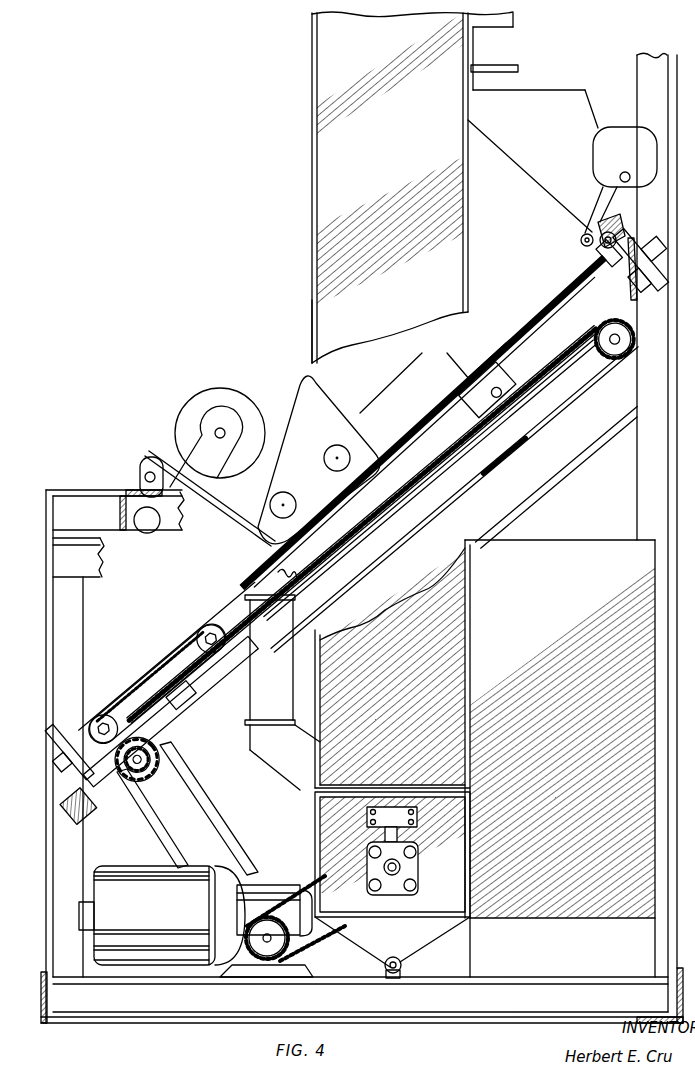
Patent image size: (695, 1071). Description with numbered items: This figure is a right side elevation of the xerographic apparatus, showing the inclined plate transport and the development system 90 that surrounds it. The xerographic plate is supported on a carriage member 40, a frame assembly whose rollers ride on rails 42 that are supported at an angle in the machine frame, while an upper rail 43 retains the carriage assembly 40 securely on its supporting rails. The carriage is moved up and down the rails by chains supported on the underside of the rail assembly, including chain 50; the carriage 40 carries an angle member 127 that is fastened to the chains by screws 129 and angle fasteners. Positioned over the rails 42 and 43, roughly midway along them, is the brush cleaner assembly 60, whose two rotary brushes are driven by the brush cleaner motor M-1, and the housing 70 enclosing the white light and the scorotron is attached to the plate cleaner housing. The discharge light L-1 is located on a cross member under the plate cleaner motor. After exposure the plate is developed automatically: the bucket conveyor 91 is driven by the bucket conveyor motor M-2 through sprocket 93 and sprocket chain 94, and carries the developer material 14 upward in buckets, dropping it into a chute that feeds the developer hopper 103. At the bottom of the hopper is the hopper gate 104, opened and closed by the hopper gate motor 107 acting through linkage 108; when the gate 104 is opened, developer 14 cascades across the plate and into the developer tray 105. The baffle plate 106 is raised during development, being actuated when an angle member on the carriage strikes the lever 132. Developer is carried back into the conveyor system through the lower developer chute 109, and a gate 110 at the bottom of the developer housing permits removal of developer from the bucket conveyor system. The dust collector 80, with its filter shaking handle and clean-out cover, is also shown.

The developer hopper 103 is at (546, 97).
The hopper gate motor 107 is at (606, 162).
The developer material 14 is at (630, 239).
The hopper gate 104 is at (637, 245).
The linkage 108 is at (590, 232).
The development system 90 is at (298, 237).
The bucket conveyor 91 is at (316, 317).
The housing 70 is at (432, 356).
The lever 132 is at (489, 369).
The baffle plate 106 is at (458, 398).
The brush cleaner assembly 60 is at (278, 386).
The brush cleaner motor M-1 is at (182, 412).
The discharge light L-1 is at (160, 530).
The developer tray 105 is at (408, 497).
The chain 50 is at (516, 447).
The upper rail 43 is at (262, 571).
The rails 42 is at (224, 632).
The carriage member 40 is at (150, 665).
The lower developer chute 109 is at (293, 695).
The dust collector 80 is at (568, 748).
The screws 129 is at (187, 695).
The angle member 127 is at (180, 712).
The bucket conveyor motor M-2 is at (124, 872).
The sprocket chain 94 is at (305, 882).
The sprocket 93 is at (275, 960).
The gate 110 is at (402, 966).